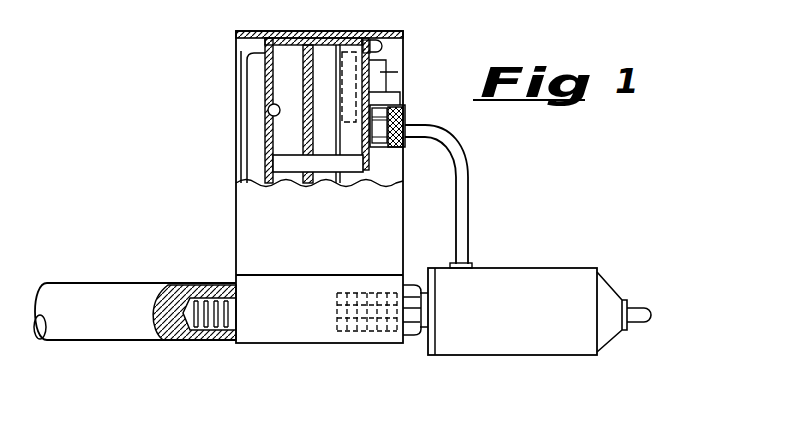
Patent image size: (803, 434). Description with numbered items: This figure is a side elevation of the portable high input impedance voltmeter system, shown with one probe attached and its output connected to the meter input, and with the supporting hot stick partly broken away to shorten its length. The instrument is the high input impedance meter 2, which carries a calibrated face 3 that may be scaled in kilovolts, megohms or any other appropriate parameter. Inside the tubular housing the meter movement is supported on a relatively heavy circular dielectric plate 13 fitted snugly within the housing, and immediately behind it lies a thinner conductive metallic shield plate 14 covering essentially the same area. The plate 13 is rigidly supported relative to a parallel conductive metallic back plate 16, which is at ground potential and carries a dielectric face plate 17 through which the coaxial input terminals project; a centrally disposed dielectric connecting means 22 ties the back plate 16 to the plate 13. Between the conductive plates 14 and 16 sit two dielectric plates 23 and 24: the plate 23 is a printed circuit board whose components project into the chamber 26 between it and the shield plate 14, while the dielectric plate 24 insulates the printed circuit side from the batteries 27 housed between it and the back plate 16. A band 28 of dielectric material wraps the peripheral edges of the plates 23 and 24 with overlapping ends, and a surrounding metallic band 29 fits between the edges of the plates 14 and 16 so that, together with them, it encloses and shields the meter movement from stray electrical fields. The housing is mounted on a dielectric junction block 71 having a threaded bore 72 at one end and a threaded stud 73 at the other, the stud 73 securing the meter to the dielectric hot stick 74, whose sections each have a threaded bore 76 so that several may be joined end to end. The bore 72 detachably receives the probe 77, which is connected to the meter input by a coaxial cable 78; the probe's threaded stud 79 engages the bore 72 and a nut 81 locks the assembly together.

The high input impedance meter 2 is at (166, 154).
The calibrated face 3 is at (549, 148).
The dielectric plate 13 is at (241, 51).
The conductive metallic shield plate 14 is at (268, 110).
The conductive metallic back plate 16 is at (370, 97).
The dielectric face plate 17 is at (370, 68).
The dielectric connecting means 22 is at (328, 163).
The printed circuit board 23 is at (331, 77).
The dielectric plate 24 is at (339, 136).
The chamber 26 is at (289, 55).
The batteries 27 is at (380, 65).
The band of dielectric material 28 is at (354, 34).
The metallic band 29 is at (325, 36).
The junction block 71 is at (313, 332).
The threaded bore 72 is at (337, 312).
The threaded stud 73 is at (233, 312).
The hot stick 74 is at (93, 293).
The threaded bore 76 is at (208, 285).
The probe 77 is at (560, 277).
The coaxial cable 78 is at (462, 197).
The threaded stud 79 is at (422, 317).
The nut 81 is at (410, 343).